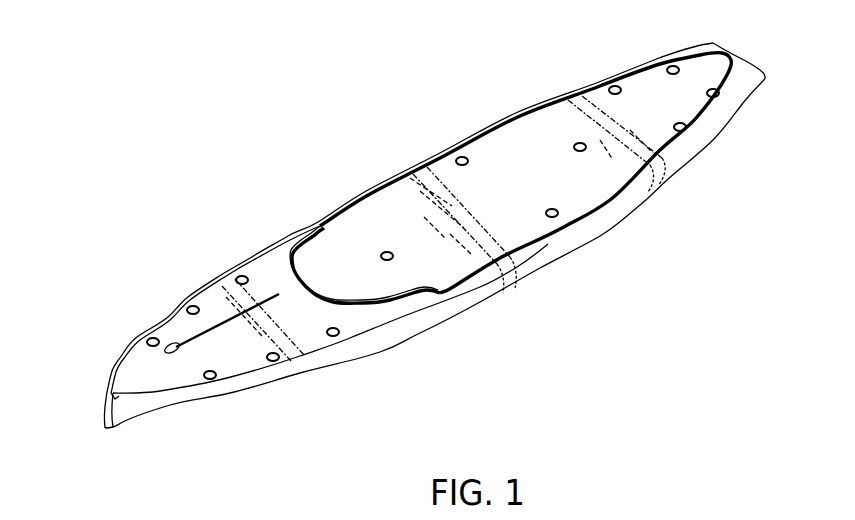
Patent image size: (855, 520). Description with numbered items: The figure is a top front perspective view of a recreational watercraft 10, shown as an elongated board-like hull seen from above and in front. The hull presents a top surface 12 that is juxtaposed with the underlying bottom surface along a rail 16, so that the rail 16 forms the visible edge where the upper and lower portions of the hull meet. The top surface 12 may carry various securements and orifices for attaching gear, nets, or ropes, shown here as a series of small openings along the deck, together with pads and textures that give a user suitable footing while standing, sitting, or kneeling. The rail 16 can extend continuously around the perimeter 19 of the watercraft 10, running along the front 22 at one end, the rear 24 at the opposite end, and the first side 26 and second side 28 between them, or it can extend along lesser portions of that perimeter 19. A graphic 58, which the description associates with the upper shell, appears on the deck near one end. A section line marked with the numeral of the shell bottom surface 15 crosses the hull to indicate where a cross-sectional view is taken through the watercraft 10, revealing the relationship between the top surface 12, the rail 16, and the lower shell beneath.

The recreational watercraft 10 is at (307, 172).
The top surface 12 is at (240, 268).
The shell bottom surface 15 is at (413, 174).
The rail 16 is at (447, 319).
The perimeter 19 is at (124, 350).
The front 22 is at (107, 399).
The rear 24 is at (750, 59).
The first side 26 is at (268, 383).
The second side 28 is at (200, 289).
The graphic 58 is at (213, 338).